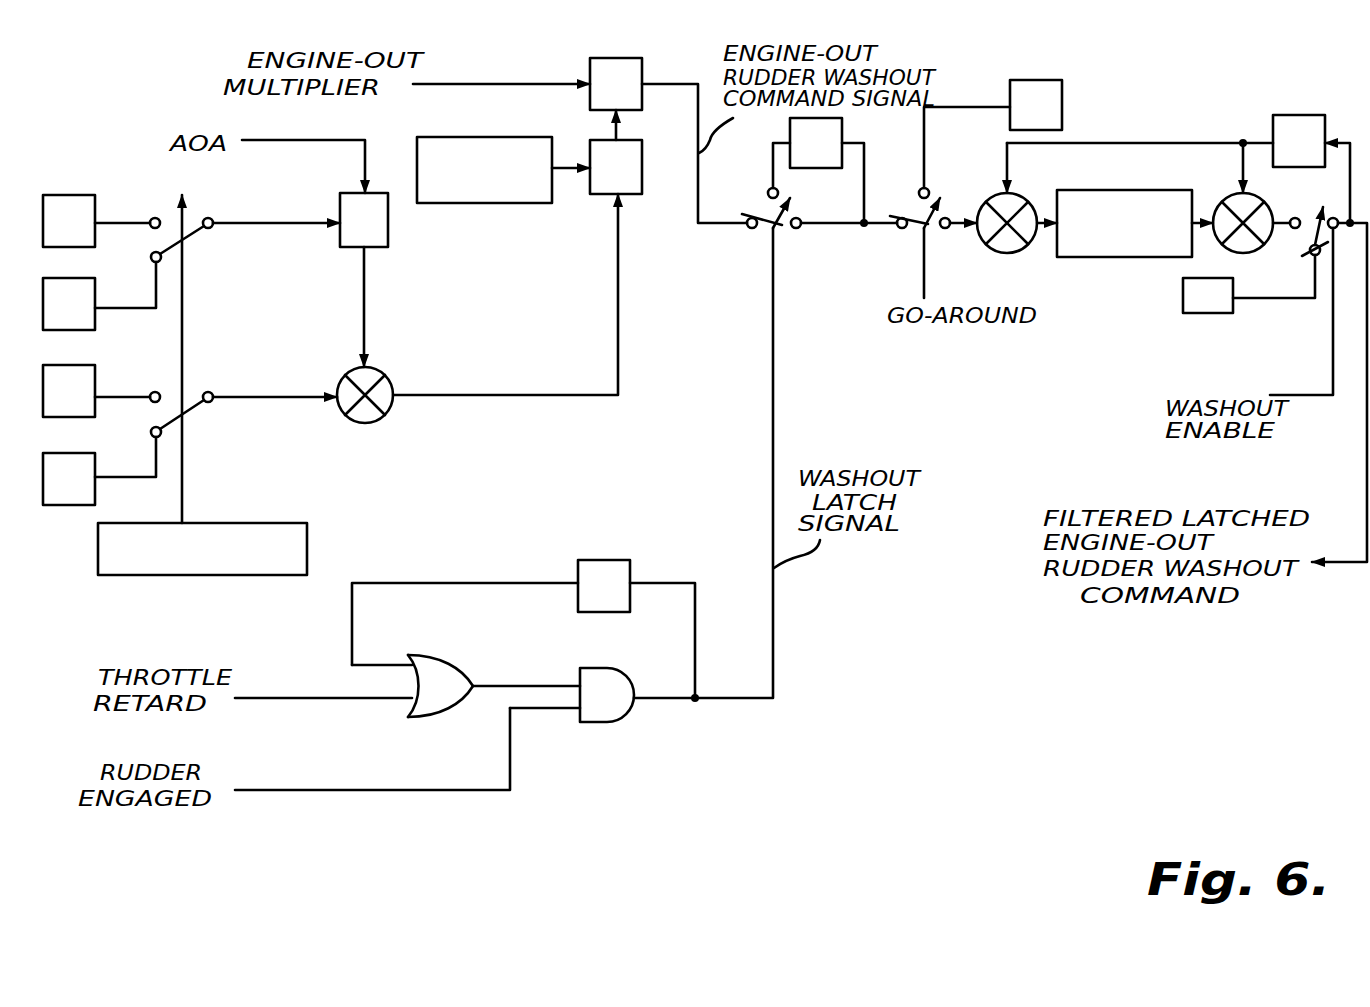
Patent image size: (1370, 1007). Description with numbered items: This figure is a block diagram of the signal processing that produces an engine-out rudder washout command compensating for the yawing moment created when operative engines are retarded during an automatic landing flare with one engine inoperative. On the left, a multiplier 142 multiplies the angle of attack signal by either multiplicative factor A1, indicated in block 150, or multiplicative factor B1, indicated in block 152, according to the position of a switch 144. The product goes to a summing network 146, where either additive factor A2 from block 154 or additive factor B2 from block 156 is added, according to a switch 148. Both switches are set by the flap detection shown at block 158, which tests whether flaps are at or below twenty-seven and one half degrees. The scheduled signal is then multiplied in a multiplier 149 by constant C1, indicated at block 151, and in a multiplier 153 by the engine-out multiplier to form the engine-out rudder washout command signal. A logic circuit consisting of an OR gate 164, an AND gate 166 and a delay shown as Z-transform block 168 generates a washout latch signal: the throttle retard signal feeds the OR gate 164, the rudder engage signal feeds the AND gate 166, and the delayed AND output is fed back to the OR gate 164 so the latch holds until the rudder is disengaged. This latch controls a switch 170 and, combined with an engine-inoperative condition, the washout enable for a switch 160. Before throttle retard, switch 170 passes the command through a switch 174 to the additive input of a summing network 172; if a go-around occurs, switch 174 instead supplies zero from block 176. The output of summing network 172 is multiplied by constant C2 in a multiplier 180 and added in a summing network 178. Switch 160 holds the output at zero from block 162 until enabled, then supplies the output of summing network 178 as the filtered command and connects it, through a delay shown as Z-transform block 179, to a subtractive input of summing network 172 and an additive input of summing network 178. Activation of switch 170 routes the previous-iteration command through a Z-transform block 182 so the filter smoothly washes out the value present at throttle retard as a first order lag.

The multiplier 142 is at (388, 232).
The switch 144 is at (198, 240).
The summing network 146 is at (390, 378).
The switch 148 is at (198, 412).
The multiplier 149 is at (640, 196).
The block indicating multiplicative factor A1 150 is at (492, 205).
The block indicating constant C1 151 is at (95, 203).
The block indicating multiplicative factor B1 152 is at (95, 288).
The multiplier 153 is at (587, 97).
The block indicating additive factor A2 154 is at (95, 375).
The block indicating additive factor B2 156 is at (111, 454).
The flap setting detection block 158 is at (267, 523).
The switch 160 is at (1293, 238).
The block indicating zero 162 is at (1190, 314).
The OR gate 164 is at (448, 660).
The AND gate 166 is at (612, 668).
The Z-transform block 168 is at (605, 560).
The switch 170 is at (784, 231).
The summing network 172 is at (1003, 253).
The switch 174 is at (912, 231).
The block indicating zero 176 is at (1062, 100).
The summing network 178 is at (1265, 201).
The Z-transform block 179 is at (1292, 115).
The multiplier 180 is at (1120, 190).
The Z-transform block 182 is at (845, 130).